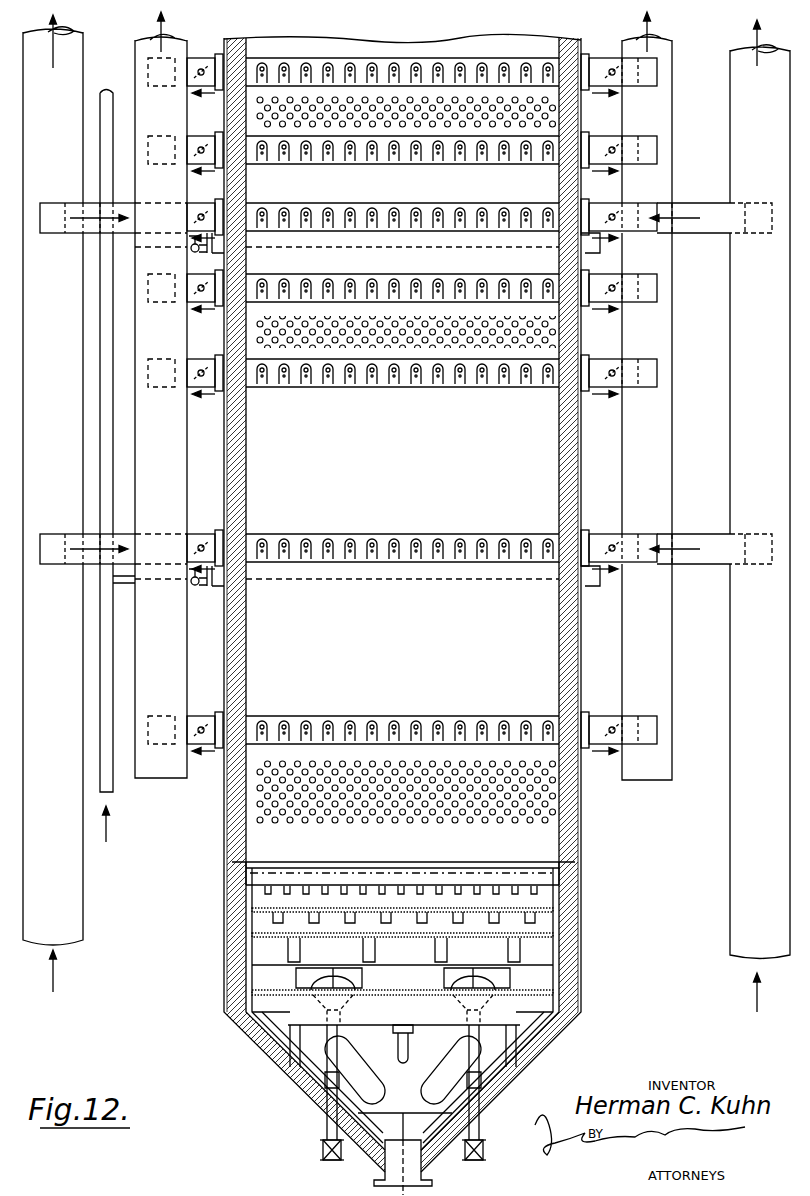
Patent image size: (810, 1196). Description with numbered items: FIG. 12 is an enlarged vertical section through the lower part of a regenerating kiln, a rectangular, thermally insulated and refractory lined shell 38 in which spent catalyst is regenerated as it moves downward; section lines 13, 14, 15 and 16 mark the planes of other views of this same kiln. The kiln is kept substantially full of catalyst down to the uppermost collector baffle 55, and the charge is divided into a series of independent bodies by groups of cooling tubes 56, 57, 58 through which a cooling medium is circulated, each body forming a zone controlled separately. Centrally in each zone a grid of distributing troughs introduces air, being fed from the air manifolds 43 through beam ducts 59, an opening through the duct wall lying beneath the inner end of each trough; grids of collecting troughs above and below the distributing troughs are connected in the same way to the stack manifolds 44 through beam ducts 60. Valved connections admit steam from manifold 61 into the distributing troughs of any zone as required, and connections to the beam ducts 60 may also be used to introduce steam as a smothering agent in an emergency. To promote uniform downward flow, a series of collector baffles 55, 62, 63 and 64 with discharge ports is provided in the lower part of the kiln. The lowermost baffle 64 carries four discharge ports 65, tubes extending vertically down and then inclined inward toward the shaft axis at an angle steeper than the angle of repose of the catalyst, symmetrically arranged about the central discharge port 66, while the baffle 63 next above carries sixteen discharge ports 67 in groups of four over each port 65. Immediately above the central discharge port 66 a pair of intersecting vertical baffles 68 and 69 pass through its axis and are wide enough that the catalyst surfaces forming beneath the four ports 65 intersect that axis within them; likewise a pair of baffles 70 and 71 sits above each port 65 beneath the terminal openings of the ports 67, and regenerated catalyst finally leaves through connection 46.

The section line 13 is at (405, 16).
The section line 14 is at (36, 90).
The section line 15 is at (170, 958).
The section line 16 is at (172, 1015).
The refractory lined shell 38 is at (579, 500).
The air manifold 43 is at (80, 58).
The stack manifold 44 is at (181, 42).
The discharge connection 46 is at (383, 1176).
The collector baffle 55 is at (535, 880).
The group of tubes 56 is at (456, 768).
The group of tubes 57 is at (466, 340).
The group of tubes 58 is at (478, 98).
The beam duct 59 is at (321, 203).
The beam duct 60 is at (315, 58).
The steam manifold 61 is at (110, 98).
The collector baffle 62 is at (556, 915).
The collector baffle 63 is at (556, 946).
The collector baffle 64 is at (556, 1003).
The discharge port 65 is at (360, 1068).
The central discharge port 66 is at (424, 1172).
The discharge port 67 is at (360, 949).
The vertical baffle 68 is at (393, 1112).
The vertical baffle 69 is at (416, 1112).
The vertical baffle 70 is at (318, 975).
The vertical baffle 71 is at (372, 978).